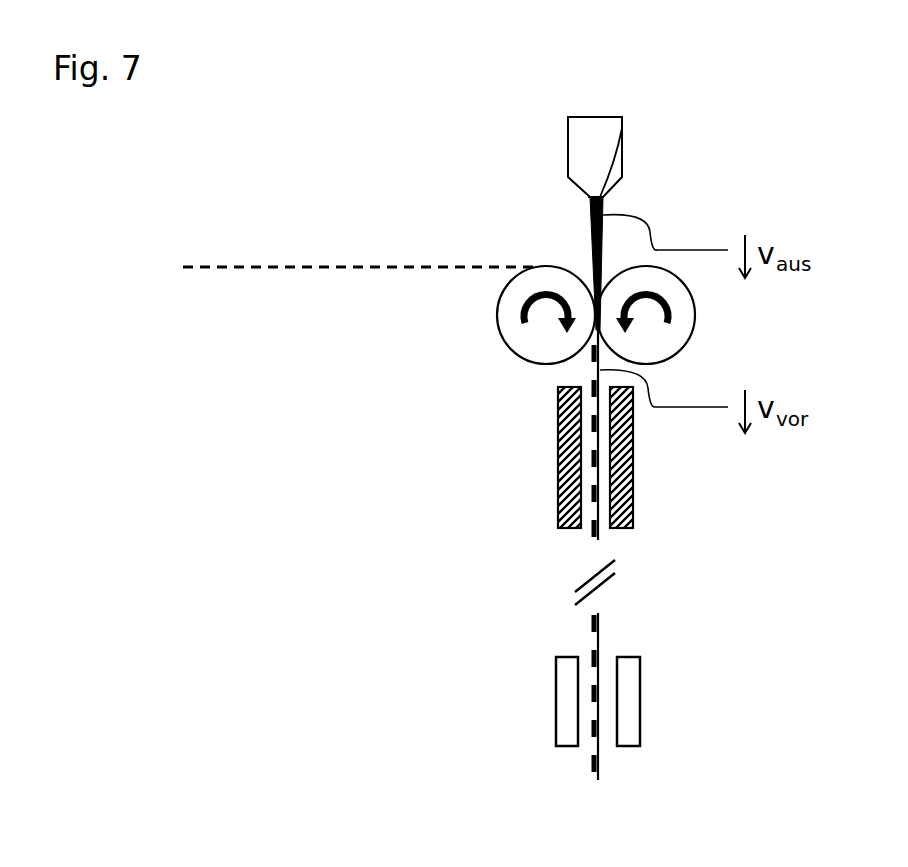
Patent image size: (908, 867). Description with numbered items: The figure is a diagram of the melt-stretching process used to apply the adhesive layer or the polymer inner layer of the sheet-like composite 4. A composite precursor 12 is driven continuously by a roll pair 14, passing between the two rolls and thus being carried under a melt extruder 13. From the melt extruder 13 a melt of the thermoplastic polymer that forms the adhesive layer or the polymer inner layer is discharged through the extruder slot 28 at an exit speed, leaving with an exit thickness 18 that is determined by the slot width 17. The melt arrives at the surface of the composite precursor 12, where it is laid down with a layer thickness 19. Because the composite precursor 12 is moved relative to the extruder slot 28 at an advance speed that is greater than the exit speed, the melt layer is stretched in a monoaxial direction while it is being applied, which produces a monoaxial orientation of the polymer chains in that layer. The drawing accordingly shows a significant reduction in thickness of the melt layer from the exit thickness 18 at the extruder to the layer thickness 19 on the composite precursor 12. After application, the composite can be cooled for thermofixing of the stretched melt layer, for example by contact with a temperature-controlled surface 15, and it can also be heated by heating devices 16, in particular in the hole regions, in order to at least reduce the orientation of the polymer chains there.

The sheet-like composite 4 is at (600, 767).
The composite precursor 12 is at (212, 267).
The melt extruder 13 is at (568, 153).
The roll pair 14 is at (697, 313).
The temperature-controlled surface 15 is at (558, 455).
The heating devices 16 is at (556, 700).
The slot width 17 is at (590, 197).
The exit thickness 18 is at (603, 197).
The layer thickness 19 is at (600, 532).
The extruder slot 28 is at (623, 128).